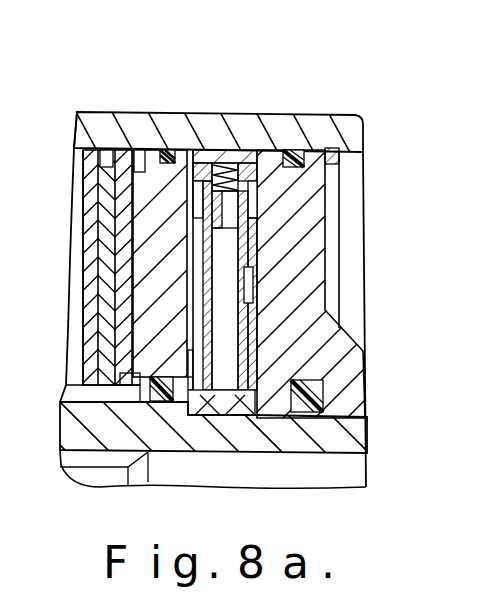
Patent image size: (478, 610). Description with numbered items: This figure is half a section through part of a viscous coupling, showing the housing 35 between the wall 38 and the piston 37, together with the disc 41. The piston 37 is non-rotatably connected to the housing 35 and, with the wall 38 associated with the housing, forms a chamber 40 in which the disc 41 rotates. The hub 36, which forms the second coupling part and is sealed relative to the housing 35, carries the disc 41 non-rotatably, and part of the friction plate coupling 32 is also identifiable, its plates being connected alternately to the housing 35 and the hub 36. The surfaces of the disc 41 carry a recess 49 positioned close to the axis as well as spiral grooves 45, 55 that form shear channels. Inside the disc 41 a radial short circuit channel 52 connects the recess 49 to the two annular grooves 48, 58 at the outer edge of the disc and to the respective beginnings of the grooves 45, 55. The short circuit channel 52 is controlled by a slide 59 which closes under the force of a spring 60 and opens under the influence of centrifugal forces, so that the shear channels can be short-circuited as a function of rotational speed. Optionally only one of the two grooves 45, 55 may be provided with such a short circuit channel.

The plate coupling 32 is at (63, 175).
The housing 35 is at (354, 128).
The hub 36 is at (96, 418).
The piston 37 is at (141, 213).
The wall 38 is at (315, 191).
The chamber 40 is at (215, 150).
The disc 41 is at (248, 257).
The spiral groove 45 is at (189, 280).
The annular groove 48 is at (200, 196).
The recess 49 is at (232, 383).
The radial short circuit channel 52 is at (218, 368).
The spiral groove 55 is at (250, 293).
The annular groove 58 is at (253, 199).
The slide 59 is at (214, 220).
The spring 60 is at (231, 170).